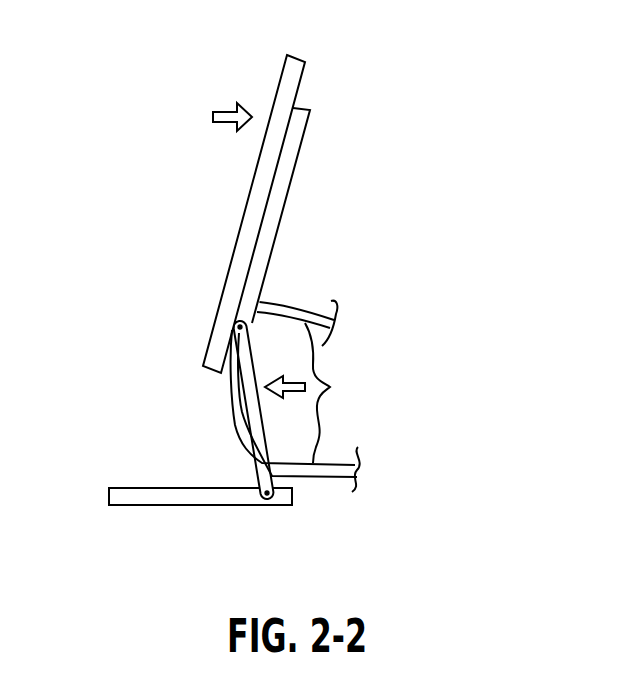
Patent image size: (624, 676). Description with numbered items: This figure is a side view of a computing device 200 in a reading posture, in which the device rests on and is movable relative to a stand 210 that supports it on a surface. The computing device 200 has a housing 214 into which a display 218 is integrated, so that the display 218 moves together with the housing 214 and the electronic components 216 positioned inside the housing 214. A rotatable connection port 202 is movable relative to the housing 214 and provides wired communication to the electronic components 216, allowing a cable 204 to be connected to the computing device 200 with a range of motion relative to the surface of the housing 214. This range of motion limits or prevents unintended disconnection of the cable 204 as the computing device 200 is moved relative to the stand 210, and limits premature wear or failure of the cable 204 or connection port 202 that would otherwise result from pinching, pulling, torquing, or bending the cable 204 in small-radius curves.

The computing device 200 is at (331, 266).
The connection port 202 is at (262, 303).
The cable 204 is at (326, 396).
The stand 210 is at (250, 480).
The housing 214 is at (270, 220).
The electronic component 216 is at (301, 149).
The display 218 is at (240, 225).